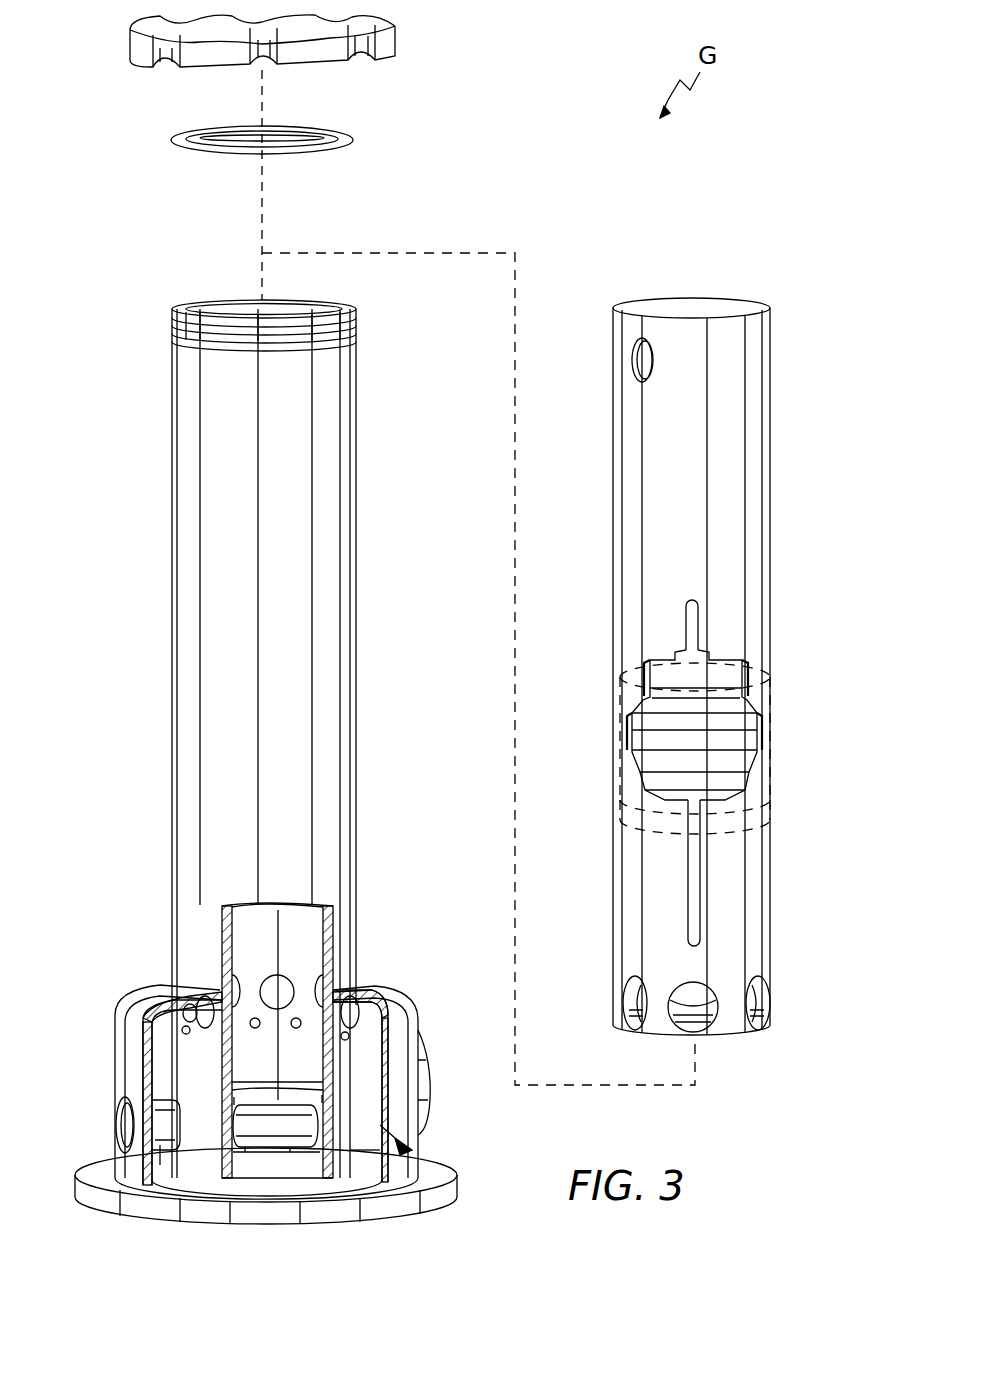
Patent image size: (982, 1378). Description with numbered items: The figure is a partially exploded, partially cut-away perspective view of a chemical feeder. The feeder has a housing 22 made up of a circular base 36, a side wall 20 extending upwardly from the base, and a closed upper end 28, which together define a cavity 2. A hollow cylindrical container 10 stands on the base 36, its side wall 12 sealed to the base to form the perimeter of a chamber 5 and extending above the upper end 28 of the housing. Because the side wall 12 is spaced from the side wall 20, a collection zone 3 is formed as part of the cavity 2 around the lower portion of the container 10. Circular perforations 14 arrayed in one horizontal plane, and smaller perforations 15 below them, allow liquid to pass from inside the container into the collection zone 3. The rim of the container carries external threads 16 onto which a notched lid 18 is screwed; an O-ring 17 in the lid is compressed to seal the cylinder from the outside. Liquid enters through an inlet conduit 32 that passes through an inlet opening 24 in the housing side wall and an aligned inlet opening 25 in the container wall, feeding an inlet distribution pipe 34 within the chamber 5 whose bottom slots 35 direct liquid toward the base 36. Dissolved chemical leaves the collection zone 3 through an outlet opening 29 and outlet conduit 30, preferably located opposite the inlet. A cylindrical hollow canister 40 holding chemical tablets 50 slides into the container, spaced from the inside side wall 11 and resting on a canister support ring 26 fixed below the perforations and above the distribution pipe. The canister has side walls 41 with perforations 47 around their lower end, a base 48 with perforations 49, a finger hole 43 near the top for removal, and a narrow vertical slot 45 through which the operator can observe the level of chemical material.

The cavity 2 is at (178, 1028).
The collection zone 3 is at (390, 1150).
The chamber 5 is at (295, 1152).
The container 10 is at (160, 436).
The inside side wall of container 11 is at (176, 656).
The side wall of container 12 is at (172, 572).
The perforations 14 is at (270, 981).
The perforations 15 is at (291, 1028).
The external threads 16 is at (357, 320).
The O-ring 17 is at (305, 132).
The lid 18 is at (130, 43).
The side wall of housing 20 is at (110, 1070).
The housing 22 is at (98, 1030).
The inlet opening 24 is at (117, 1128).
The inlet opening 25 is at (180, 1130).
The canister support ring 26 is at (234, 1097).
The closed upper end of housing 28 is at (370, 990).
The outlet opening 29 is at (418, 1140).
The outlet conduit 30 is at (428, 1062).
The inlet conduit 32 is at (163, 1145).
The inlet distribution pipe 34 is at (278, 1138).
The slots 35 is at (265, 1148).
The base 36 is at (80, 1185).
The canister 40 is at (604, 520).
The side wall of canister 41 is at (772, 480).
The finger hole 43 is at (640, 360).
The slot 45 is at (701, 880).
The perforations 47 is at (765, 1008).
The base of canister 48 is at (740, 1036).
The perforations 49 is at (706, 1014).
The tablets 50 is at (660, 777).